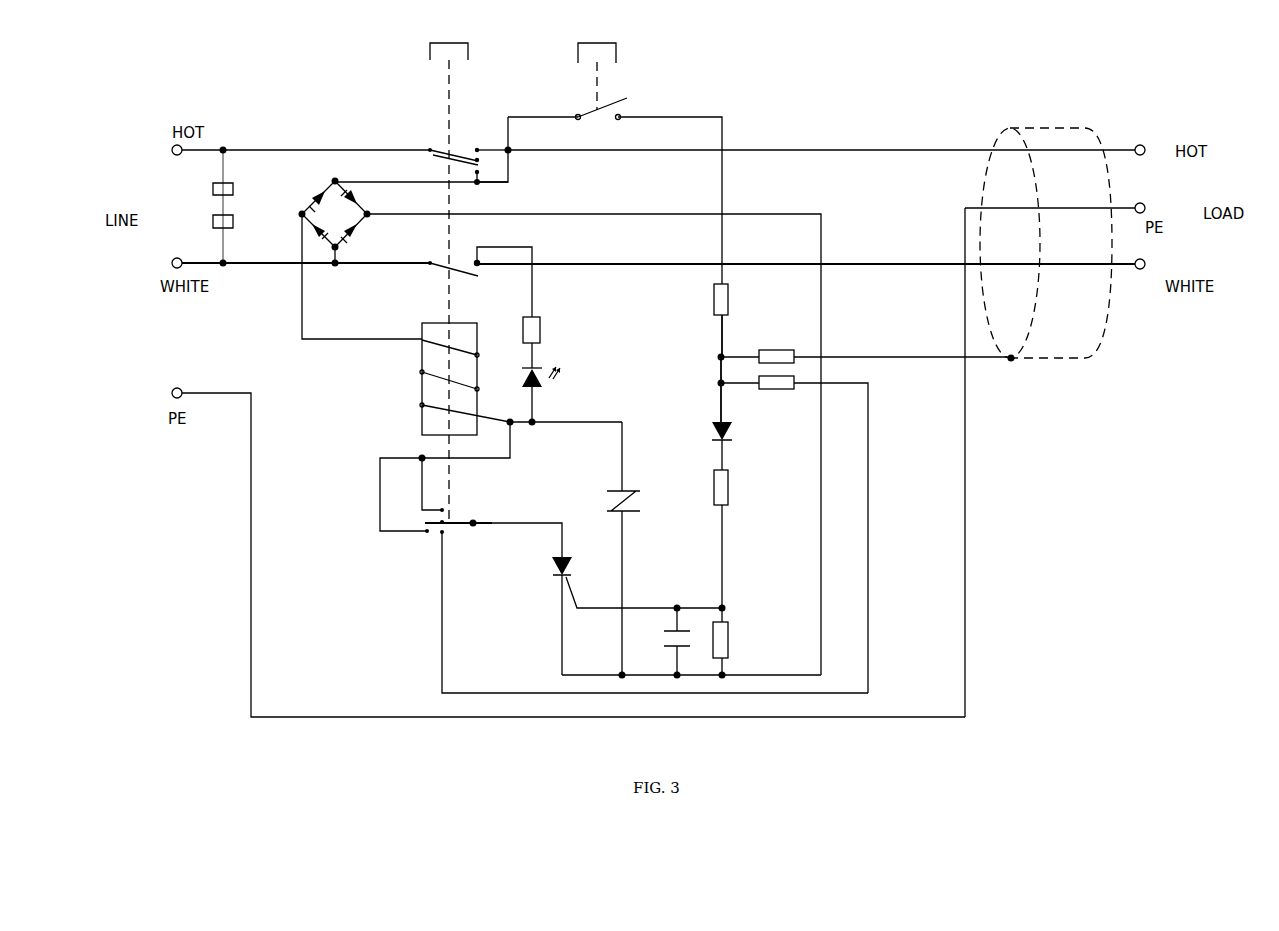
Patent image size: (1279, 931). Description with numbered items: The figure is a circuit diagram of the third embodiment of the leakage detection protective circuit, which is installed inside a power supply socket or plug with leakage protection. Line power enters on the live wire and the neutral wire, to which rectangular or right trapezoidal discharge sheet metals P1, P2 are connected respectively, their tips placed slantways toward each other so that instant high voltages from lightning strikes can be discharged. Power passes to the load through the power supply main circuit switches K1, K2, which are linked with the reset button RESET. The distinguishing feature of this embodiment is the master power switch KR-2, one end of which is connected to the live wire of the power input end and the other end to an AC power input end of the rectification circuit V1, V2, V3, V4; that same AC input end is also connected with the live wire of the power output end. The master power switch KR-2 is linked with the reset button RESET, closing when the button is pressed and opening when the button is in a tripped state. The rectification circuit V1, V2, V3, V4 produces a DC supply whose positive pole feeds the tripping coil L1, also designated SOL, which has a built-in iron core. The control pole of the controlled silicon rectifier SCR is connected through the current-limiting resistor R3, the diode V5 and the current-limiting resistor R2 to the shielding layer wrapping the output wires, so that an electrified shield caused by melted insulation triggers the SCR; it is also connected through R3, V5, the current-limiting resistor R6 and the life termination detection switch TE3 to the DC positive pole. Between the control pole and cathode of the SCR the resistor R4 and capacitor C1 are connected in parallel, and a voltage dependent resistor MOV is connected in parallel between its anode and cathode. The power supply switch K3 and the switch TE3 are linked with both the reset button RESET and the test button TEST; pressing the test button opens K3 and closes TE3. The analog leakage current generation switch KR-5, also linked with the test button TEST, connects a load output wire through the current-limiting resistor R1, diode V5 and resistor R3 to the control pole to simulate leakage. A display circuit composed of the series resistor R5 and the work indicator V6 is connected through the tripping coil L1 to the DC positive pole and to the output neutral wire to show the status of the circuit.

The discharge sheet metal P1 is at (236, 189).
The discharge sheet metal P2 is at (236, 224).
The rectification circuit diode V1 is at (309, 192).
The rectification circuit diode V2 is at (317, 244).
The rectification circuit diode V3 is at (364, 197).
The rectification circuit diode V4 is at (360, 241).
The power supply main circuit switch K1 is at (468, 143).
The master power switch KR-2 is at (464, 151).
The reset button RESET is at (439, 269).
The test button TEST is at (596, 63).
The analog leakage current generation switch KR-5 is at (615, 188).
The power supply main circuit switch K2 is at (480, 280).
The series resistor R5 is at (545, 342).
The work indicator V6 is at (545, 394).
The voltage dependent resistor MOV is at (648, 548).
The tripping coil L1 is at (465, 379).
The solenoid SOL is at (410, 441).
The power supply switch K3 is at (457, 492).
The life termination detection switch TE3 is at (633, 606).
The controlled silicon rectifier SCR is at (637, 608).
The capacitor C1 is at (663, 641).
The resistor R4 is at (735, 641).
The current-limiting resistor R1 is at (704, 320).
The current-limiting resistor R2 is at (866, 345).
The current-limiting resistor R6 is at (794, 534).
The diode V5 is at (740, 446).
The current-limiting resistor R3 is at (737, 539).